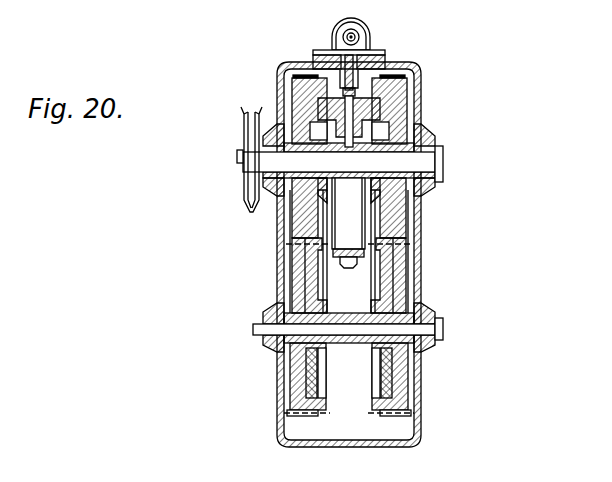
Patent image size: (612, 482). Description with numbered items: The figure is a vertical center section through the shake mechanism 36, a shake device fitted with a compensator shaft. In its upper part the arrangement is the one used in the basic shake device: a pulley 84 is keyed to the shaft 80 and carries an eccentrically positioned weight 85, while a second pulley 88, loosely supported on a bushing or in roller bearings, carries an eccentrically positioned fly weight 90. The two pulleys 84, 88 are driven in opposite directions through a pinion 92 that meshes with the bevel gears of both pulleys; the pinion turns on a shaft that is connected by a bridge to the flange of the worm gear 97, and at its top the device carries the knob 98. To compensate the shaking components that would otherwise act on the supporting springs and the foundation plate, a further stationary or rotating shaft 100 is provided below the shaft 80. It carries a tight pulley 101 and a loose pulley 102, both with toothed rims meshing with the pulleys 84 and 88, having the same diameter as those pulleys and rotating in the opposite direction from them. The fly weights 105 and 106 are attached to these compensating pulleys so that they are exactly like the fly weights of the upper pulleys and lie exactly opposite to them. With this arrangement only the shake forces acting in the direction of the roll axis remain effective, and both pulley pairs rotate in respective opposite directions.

The shake mechanism 36 is at (421, 82).
The shaft 80 is at (416, 161).
The pulley 84 is at (315, 222).
The eccentrically positioned weight 85 is at (302, 107).
The pulley 88 is at (386, 218).
The fly weight 90 is at (396, 115).
The pinion 92 is at (363, 100).
The worm gear 97 is at (348, 268).
The adjusting knob 98 is at (358, 34).
The shaft 100 is at (277, 330).
The tight pulley 101 is at (308, 278).
The loose pulley 102 is at (388, 290).
The fly weight 105 is at (295, 386).
The fly weight 106 is at (397, 372).